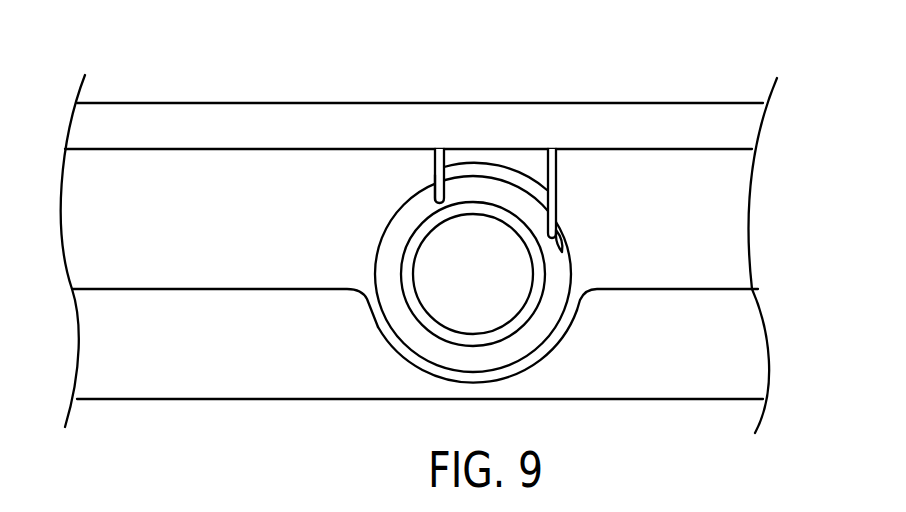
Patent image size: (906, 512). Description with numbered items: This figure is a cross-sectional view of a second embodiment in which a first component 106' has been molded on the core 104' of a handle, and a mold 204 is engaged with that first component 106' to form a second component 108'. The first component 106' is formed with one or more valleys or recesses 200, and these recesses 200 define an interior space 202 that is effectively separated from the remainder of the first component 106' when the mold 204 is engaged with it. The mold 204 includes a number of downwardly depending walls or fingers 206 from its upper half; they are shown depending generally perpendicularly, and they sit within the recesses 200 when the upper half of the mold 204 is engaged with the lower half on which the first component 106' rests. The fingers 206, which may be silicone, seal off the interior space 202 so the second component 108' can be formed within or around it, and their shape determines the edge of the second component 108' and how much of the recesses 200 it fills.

The mold 204 is at (130, 101).
The recesses 200 is at (433, 178).
The fingers 206 is at (431, 161).
The second component 108' is at (495, 116).
The interior space 202 is at (495, 102).
The first component 106' is at (418, 274).
The core 104' is at (422, 326).